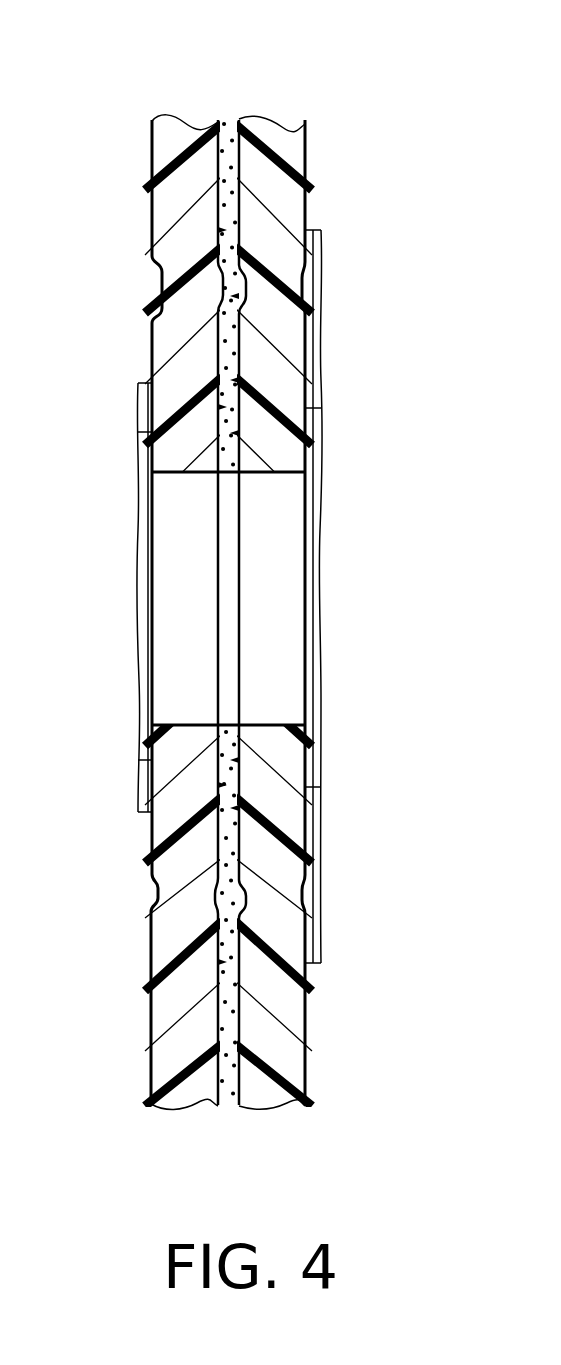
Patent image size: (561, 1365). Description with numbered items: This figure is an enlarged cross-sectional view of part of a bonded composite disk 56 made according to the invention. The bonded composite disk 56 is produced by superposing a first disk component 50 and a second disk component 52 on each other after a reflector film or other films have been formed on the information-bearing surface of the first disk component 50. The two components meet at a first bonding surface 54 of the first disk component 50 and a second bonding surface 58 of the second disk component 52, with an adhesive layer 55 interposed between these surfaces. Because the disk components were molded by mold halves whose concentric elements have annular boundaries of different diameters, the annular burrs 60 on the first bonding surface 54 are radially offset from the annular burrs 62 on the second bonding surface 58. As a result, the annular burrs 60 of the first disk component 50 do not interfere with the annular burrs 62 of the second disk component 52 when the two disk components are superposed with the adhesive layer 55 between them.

The first disk component 50 is at (273, 93).
The second disk component 52 is at (186, 100).
The first bonding surface 54 is at (238, 1040).
The adhesive layer 55 is at (237, 181).
The bonded composite disk 56 is at (220, 1128).
The second bonding surface 58 is at (212, 1030).
The annular burrs 60 is at (342, 225).
The annular burrs 62 is at (246, 231).